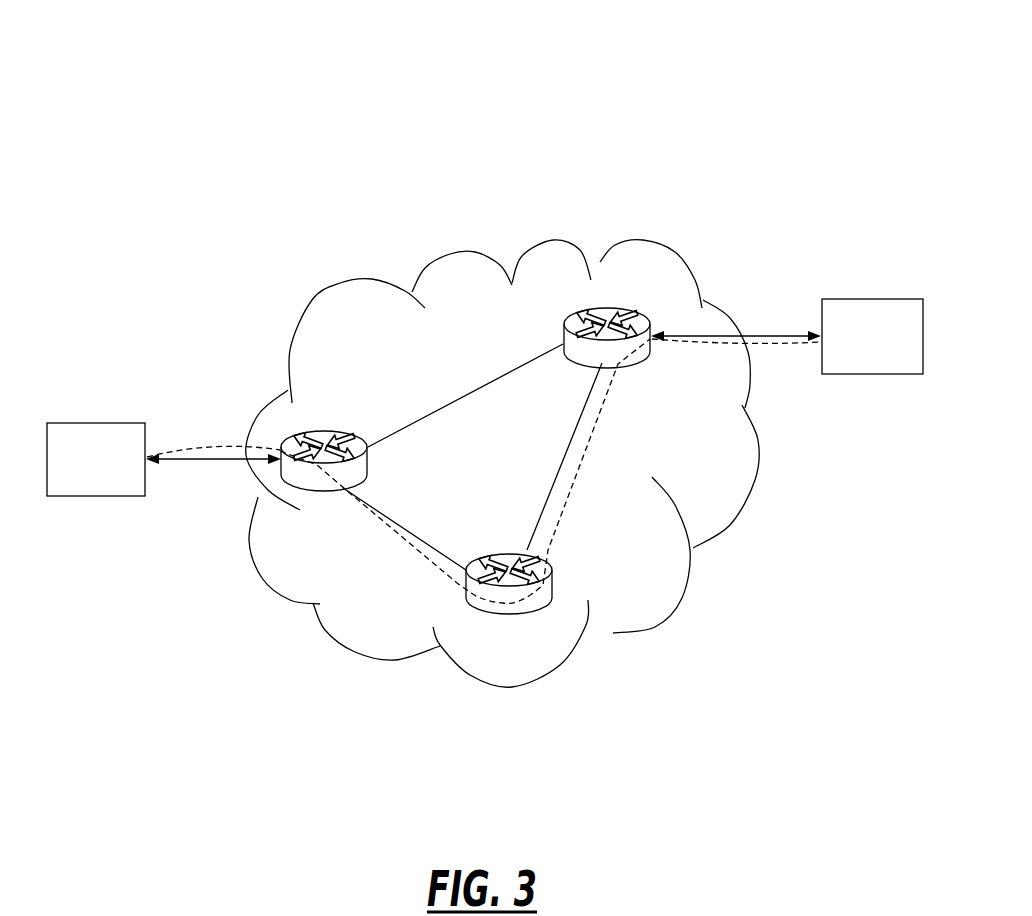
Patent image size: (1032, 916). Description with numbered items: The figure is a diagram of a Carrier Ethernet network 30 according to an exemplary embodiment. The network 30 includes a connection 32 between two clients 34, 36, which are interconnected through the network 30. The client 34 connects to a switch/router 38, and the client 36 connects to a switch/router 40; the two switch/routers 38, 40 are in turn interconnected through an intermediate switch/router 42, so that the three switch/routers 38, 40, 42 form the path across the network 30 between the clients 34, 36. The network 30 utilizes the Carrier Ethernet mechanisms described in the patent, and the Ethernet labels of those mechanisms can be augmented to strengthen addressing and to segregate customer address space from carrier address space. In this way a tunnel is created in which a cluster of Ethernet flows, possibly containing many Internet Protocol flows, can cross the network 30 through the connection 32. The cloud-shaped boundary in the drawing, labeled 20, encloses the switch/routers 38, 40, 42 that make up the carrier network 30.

The Carrier Ethernet network 30 is at (532, 84).
The network cloud 20 is at (392, 660).
The connection 32 is at (218, 447).
The client 34 is at (108, 422).
The client 36 is at (887, 298).
The switch/router 38 is at (325, 430).
The switch/router 40 is at (625, 367).
The intermediate switch/router 42 is at (503, 552).